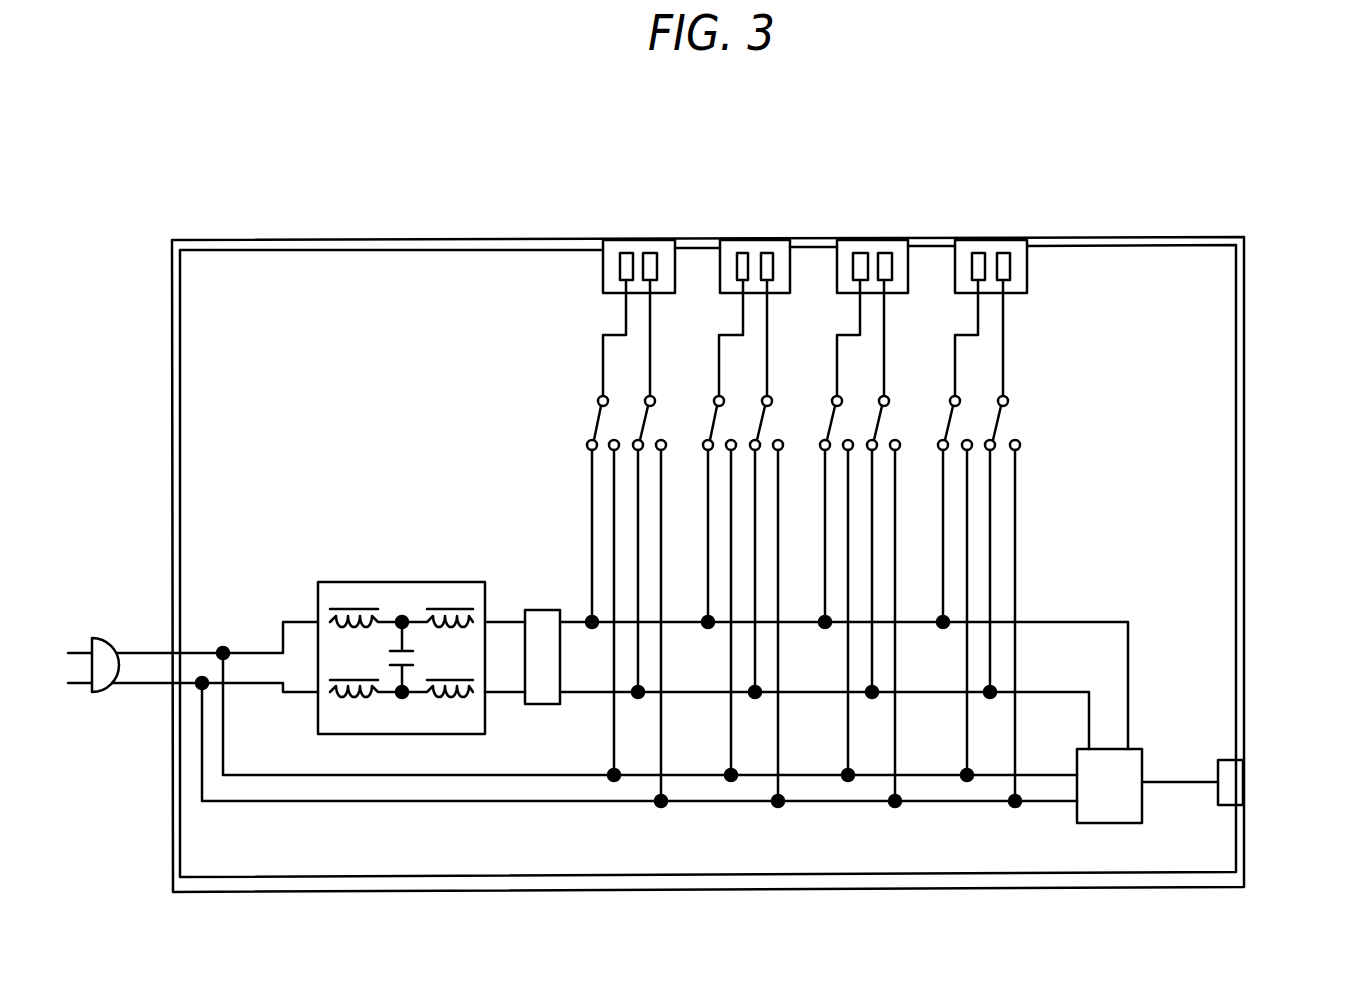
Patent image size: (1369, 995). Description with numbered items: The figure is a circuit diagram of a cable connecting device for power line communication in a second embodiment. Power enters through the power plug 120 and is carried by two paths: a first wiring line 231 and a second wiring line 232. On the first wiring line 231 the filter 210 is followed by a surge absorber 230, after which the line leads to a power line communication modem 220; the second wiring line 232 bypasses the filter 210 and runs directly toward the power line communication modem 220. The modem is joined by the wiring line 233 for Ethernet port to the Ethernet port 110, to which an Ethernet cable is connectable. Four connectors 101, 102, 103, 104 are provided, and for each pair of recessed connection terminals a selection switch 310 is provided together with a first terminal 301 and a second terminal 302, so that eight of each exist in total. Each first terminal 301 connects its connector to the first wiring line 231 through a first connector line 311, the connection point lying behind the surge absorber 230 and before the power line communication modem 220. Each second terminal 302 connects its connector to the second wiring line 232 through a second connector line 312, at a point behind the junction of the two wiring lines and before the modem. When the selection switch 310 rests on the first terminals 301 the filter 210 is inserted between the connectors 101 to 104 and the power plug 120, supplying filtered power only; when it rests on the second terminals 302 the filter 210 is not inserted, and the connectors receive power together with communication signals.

The connector 101 is at (615, 253).
The connector 102 is at (732, 252).
The connector 103 is at (845, 252).
The connector 104 is at (965, 252).
The Ethernet port 110 is at (1232, 792).
The power plug 120 is at (103, 692).
The filter 210 is at (366, 582).
The power line communication modem 220 is at (1095, 813).
The surge absorber 230 is at (543, 704).
The first wiring line 231 is at (1057, 692).
The second wiring line 232 is at (378, 776).
The wiring line for Ethernet port 233 is at (1180, 778).
The first terminal 301 is at (587, 445).
The second terminal 302 is at (610, 453).
The selection switch 310 is at (646, 398).
The first connector line 311 is at (640, 568).
The second connector line 312 is at (661, 760).